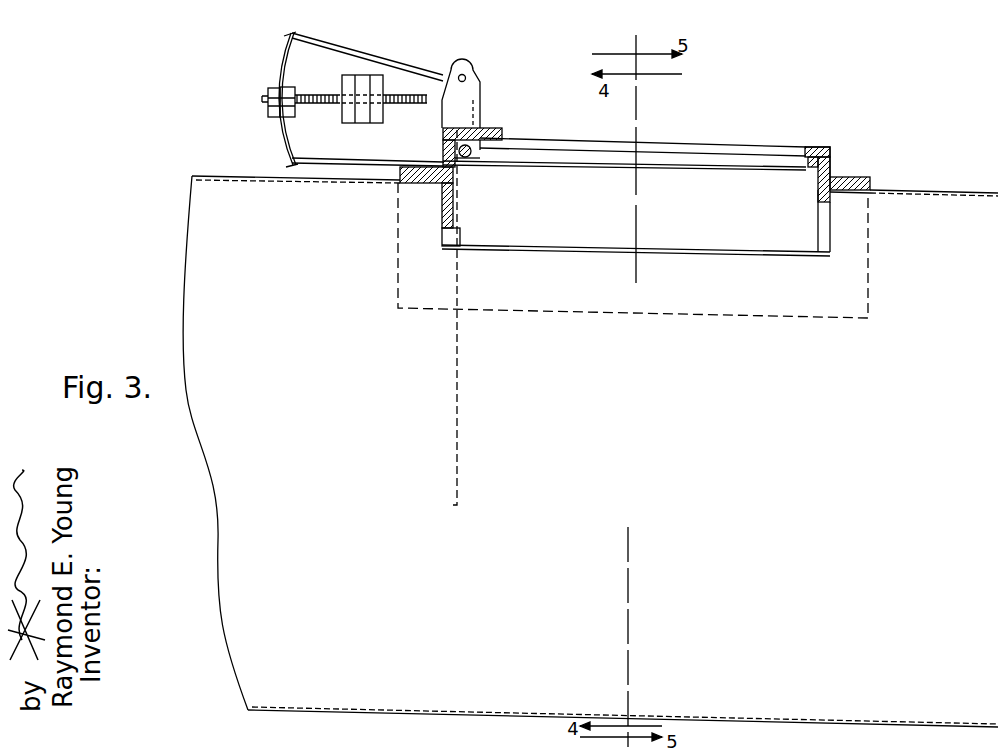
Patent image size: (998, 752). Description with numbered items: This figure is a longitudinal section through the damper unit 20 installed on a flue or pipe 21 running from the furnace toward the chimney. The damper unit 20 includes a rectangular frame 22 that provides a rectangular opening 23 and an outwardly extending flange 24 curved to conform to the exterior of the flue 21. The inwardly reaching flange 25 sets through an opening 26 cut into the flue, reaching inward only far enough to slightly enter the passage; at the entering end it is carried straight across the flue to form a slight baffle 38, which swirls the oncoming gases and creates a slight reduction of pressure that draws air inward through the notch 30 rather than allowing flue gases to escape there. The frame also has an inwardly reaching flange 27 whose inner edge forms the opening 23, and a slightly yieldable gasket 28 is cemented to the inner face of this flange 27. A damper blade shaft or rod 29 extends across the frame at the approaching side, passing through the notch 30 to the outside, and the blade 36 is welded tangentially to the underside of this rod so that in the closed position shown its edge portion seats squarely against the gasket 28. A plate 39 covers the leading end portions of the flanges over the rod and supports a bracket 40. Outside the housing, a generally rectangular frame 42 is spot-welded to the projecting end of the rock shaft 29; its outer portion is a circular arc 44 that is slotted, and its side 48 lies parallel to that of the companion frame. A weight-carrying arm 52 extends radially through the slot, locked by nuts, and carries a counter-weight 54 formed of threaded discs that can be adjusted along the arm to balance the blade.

The damper unit 20 is at (843, 150).
The flue or pipe 21 is at (969, 188).
The frame 22 is at (832, 155).
The rectangular opening 23 is at (790, 147).
The outwardly extending flange 24 is at (853, 178).
The inwardly reaching flange 25 is at (818, 197).
The opening 26 is at (833, 192).
The inwardly reaching flange 27 is at (815, 147).
The gasket 28 is at (800, 157).
The damper blade shaft or rod 29 is at (483, 162).
The notch 30 is at (478, 146).
The blade 36 is at (688, 163).
The baffle 38 is at (453, 223).
The plate 39 is at (490, 128).
The bracket 40 is at (452, 70).
The frame 42 is at (340, 47).
The curved portion 44 is at (283, 68).
The frame side 48 is at (330, 164).
The weight-carrying arm 52 is at (312, 100).
The counter-weight 54 is at (358, 82).